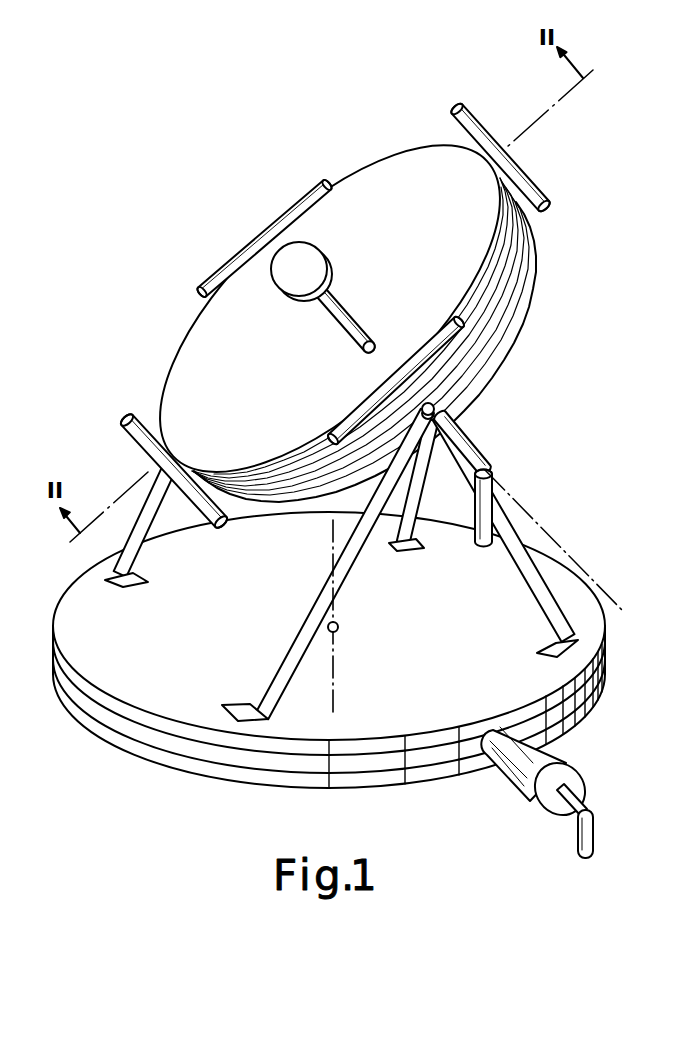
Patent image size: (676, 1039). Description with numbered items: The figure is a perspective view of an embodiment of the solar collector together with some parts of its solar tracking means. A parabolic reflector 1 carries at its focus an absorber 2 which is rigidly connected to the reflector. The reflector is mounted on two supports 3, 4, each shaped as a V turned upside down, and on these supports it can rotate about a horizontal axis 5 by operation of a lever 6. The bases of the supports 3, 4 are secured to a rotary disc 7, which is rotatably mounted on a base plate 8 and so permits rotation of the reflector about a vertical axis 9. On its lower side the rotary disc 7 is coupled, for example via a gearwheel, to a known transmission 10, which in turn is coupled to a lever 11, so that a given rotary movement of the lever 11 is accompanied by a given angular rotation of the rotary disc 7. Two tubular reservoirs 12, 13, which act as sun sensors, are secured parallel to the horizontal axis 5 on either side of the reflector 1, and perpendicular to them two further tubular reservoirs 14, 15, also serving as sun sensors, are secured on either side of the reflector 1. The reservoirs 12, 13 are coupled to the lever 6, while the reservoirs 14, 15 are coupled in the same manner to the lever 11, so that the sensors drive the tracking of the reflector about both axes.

The parabolic reflector 1 is at (380, 182).
The absorber 2 is at (303, 257).
The support 3 is at (538, 588).
The support 4 is at (132, 556).
The horizontal axis 5 is at (558, 543).
The lever 6 is at (478, 543).
The rotary disc 7 is at (83, 618).
The base plate 8 is at (373, 780).
The vertical axis 9 is at (326, 537).
The transmission 10 is at (523, 765).
The lever 11 is at (576, 845).
The tubular reservoir 12 is at (124, 425).
The tubular reservoir 13 is at (465, 110).
The tubular reservoir 14 is at (466, 328).
The tubular reservoir 15 is at (287, 212).